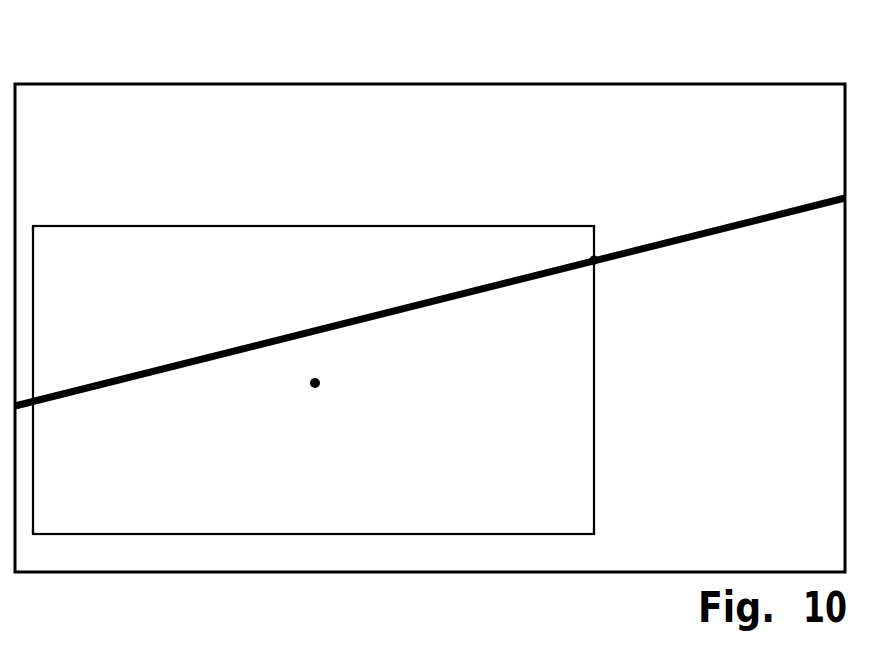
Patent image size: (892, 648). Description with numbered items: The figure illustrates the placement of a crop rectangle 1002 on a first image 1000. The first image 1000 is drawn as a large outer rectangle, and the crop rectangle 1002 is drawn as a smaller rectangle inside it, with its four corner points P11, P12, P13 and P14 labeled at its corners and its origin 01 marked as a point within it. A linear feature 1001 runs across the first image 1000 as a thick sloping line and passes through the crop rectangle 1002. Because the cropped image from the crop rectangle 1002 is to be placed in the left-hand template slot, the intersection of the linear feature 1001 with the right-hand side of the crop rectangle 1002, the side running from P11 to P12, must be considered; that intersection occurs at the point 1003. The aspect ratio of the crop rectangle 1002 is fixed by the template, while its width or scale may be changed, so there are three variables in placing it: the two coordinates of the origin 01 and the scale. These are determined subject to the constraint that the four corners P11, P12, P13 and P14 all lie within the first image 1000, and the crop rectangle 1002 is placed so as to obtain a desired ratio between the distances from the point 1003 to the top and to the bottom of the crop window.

The first image 1000 is at (522, 82).
The linear feature 1001 is at (710, 224).
The crop rectangle 1002 is at (298, 226).
The intersection point 1003 is at (597, 264).
The origin 01 is at (320, 386).
The corner point P11 is at (580, 213).
The corner point P12 is at (581, 549).
The corner point P13 is at (49, 548).
The corner point P14 is at (49, 213).